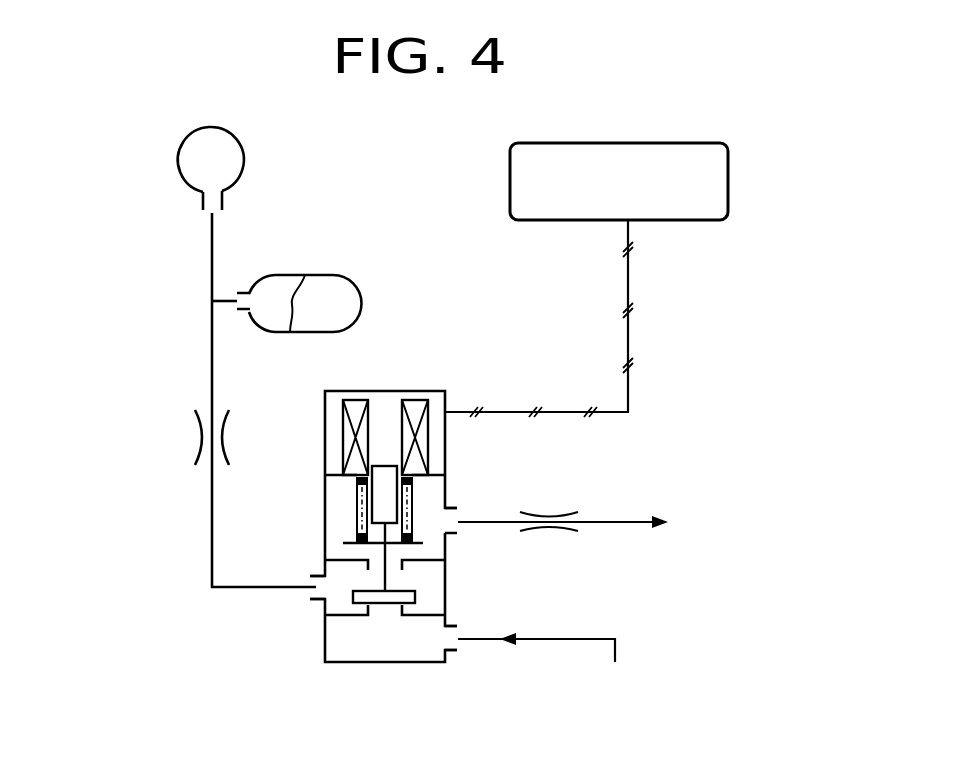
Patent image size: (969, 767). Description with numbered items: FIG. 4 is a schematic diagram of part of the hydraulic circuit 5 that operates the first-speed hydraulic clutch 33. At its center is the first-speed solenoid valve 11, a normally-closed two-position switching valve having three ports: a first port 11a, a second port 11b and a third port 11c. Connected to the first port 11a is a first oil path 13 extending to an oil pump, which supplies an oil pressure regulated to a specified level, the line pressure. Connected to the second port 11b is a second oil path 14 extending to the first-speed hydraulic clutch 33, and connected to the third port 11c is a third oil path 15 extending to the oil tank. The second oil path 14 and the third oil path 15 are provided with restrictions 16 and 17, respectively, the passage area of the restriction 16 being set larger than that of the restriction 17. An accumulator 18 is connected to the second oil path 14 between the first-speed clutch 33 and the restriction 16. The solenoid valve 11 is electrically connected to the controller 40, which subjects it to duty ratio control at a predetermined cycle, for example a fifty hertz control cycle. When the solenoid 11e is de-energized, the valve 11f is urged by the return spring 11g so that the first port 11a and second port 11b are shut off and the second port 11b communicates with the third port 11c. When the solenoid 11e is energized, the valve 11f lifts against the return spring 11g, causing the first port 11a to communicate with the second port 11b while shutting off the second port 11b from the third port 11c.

The hydraulic circuit 5 is at (138, 212).
The first-speed solenoid valve 11 is at (316, 648).
The first port 11a is at (451, 651).
The second port 11b is at (312, 599).
The third port 11c is at (451, 535).
The solenoid 11e is at (428, 443).
The valve 11f is at (385, 603).
The return spring 11g is at (357, 492).
The first oil path 13 is at (550, 639).
The second oil path 14 is at (212, 530).
The third oil path 15 is at (630, 520).
The restriction 16 is at (195, 440).
The restriction 17 is at (553, 521).
The accumulator 18 is at (305, 275).
The first-speed hydraulic clutch 33 is at (244, 160).
The controller 40 is at (690, 221).